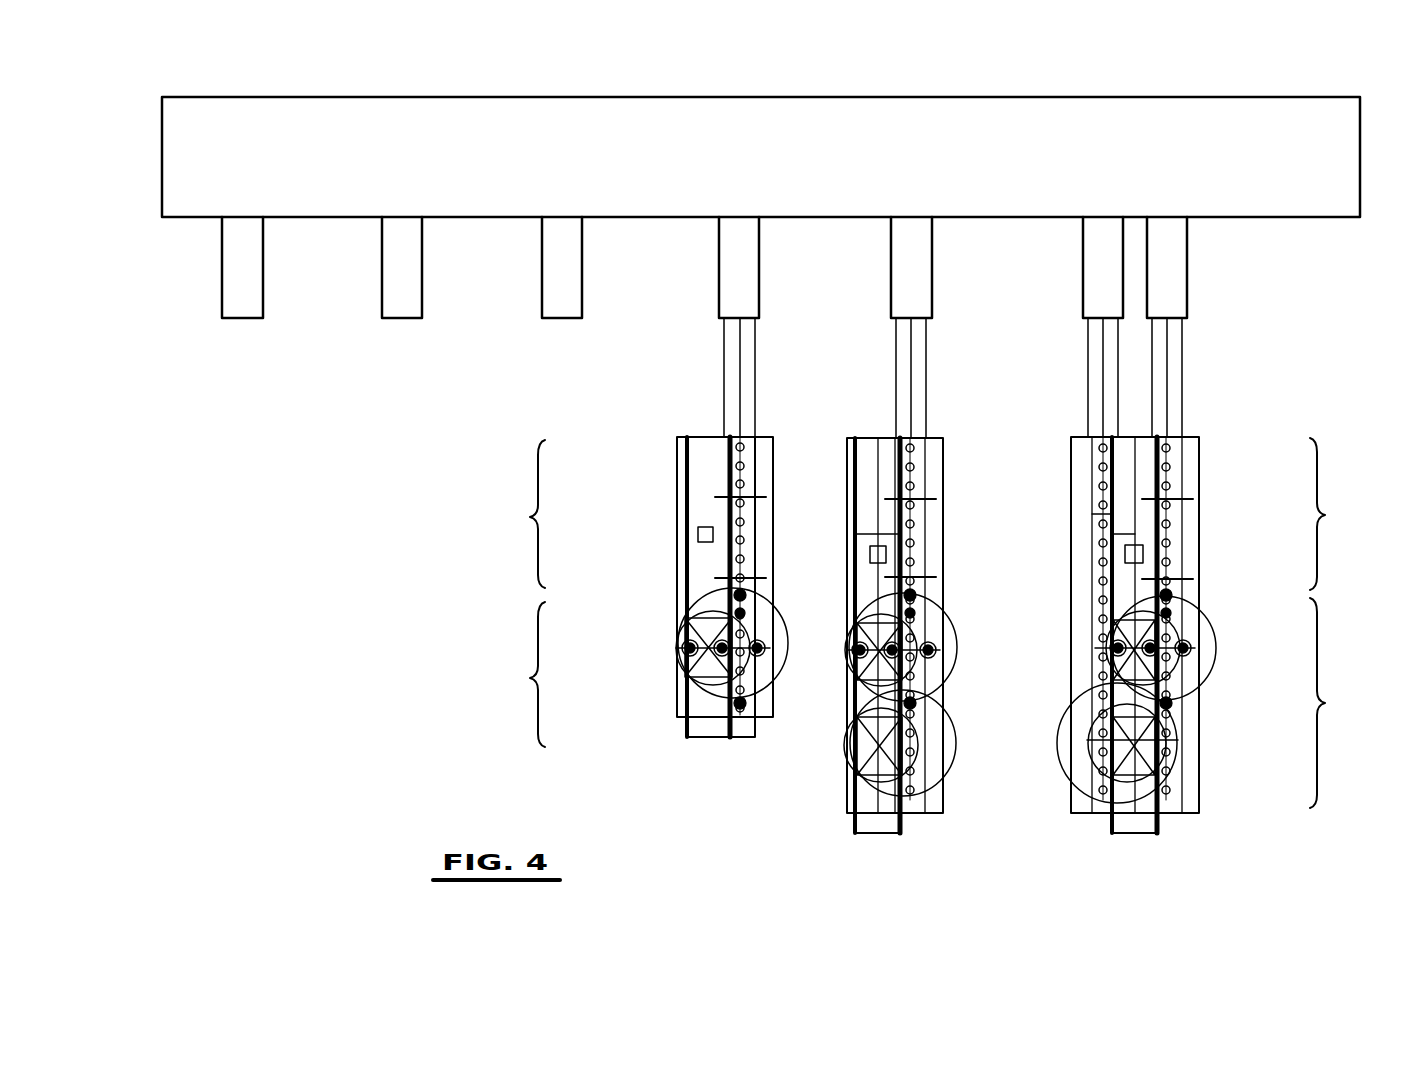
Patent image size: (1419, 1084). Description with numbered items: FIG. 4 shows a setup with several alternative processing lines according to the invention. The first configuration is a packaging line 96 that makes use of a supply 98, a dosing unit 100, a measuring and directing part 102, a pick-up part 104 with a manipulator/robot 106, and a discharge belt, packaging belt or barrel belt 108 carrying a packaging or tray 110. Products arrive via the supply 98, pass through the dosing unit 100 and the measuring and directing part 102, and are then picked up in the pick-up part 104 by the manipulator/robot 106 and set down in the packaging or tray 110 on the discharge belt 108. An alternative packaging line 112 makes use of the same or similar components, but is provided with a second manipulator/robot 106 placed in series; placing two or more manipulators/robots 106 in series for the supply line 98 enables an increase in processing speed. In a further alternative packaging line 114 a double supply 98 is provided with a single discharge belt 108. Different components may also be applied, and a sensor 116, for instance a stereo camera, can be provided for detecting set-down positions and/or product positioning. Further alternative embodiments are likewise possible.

The packaging line 96 is at (672, 300).
The supply 98 is at (750, 255).
The dosing unit 100 is at (752, 372).
The measuring and directing part 102 is at (928, 514).
The pick-up part 104 is at (928, 703).
The manipulator/robot 106 is at (780, 668).
The discharge belt, packaging belt or barrel belt 108 is at (707, 447).
The packaging or tray 110 is at (705, 668).
The alternative packaging line 112 is at (990, 238).
The further alternative packaging line 114 is at (1240, 247).
The sensor 116 is at (698, 532).